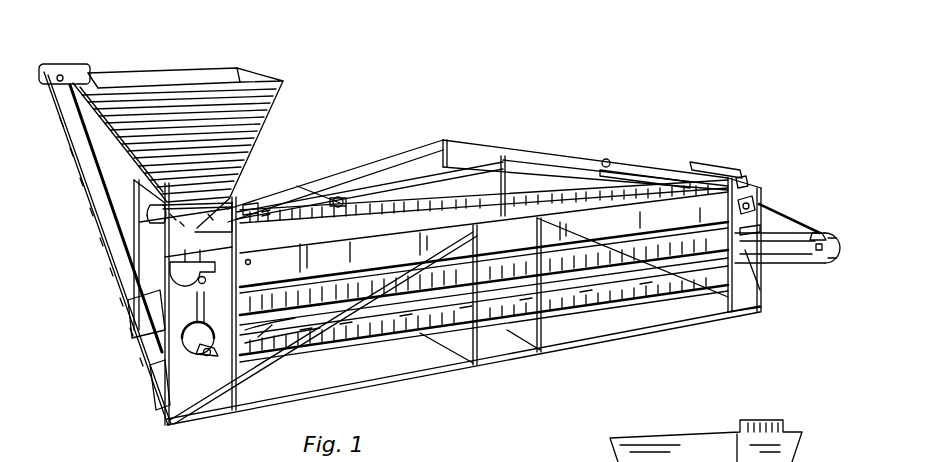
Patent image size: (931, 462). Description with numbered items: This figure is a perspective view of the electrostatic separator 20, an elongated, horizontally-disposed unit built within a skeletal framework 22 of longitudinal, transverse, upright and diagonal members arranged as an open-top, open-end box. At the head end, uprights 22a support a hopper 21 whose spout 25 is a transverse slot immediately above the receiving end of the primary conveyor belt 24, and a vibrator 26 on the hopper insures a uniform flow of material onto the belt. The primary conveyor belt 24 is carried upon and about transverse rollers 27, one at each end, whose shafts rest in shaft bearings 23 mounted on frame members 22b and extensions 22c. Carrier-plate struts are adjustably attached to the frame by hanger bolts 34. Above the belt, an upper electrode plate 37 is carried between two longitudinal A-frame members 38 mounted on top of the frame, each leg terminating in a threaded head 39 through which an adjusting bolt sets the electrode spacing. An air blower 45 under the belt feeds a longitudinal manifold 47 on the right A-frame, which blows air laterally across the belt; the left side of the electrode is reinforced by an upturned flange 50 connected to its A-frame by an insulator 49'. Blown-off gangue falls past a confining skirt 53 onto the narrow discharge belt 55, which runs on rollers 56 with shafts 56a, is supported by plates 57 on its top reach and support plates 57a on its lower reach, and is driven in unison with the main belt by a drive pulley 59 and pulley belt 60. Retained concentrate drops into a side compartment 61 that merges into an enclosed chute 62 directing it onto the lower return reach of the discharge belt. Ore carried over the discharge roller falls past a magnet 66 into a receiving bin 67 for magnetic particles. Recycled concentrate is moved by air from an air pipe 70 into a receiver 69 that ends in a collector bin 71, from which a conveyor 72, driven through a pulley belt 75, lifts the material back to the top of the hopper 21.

The electrostatic separator 20 is at (456, 99).
The hopper 21 is at (258, 108).
The skeletal framework 22 is at (393, 381).
The uprights 22a is at (137, 192).
The frame members 22b is at (178, 257).
The extensions 22c is at (788, 262).
The shaft bearings 23 is at (200, 322).
The primary conveyor belt 24 is at (178, 232).
The spout 25 is at (200, 198).
The vibrator 26 is at (150, 217).
The transverse rollers 27 is at (172, 272).
The hanger bolt 34 is at (251, 262).
The upper electrode plate 37 is at (250, 205).
The A-frame members 38 is at (503, 157).
The threaded head 39 is at (266, 212).
The air blower 45 is at (500, 298).
The manifold 47 is at (362, 194).
The insulator 49' is at (473, 166).
The upturned flange 50 is at (672, 168).
The confining skirt 53 is at (576, 280).
The discharge belt 55 is at (414, 305).
The rollers 56 is at (192, 372).
The shafts 56a is at (840, 240).
The plates 57 is at (382, 300).
The support plates 57a is at (612, 305).
The drive pulley 59 is at (755, 206).
The pulley belt 60 is at (784, 218).
The side compartment 61 is at (728, 236).
The enclosed chute 62 is at (762, 272).
The magnet 66 is at (716, 163).
The receiving bin 67 is at (686, 312).
The receiver 69 is at (268, 327).
The air pipe 70 is at (298, 340).
The collector bin 71 is at (158, 372).
The conveyor 72 is at (85, 187).
The pulley belt 75 is at (140, 303).